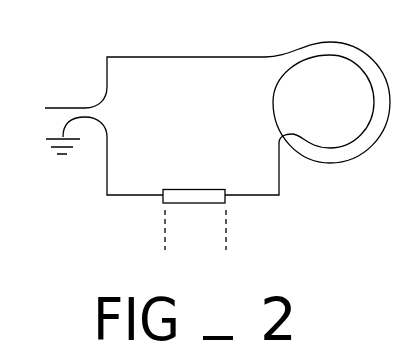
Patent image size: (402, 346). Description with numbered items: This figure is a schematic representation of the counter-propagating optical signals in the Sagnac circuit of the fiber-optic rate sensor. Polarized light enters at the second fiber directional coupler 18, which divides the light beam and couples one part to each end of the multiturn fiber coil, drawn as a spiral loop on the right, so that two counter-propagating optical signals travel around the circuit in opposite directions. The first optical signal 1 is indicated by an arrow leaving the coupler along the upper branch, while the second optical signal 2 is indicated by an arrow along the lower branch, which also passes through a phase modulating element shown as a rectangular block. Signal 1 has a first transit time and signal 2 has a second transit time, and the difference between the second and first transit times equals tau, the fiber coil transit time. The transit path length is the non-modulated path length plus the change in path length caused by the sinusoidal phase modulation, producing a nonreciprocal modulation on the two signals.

The second fiber directional coupler 18 is at (74, 92).
The counter propagating optical signal 1 is at (92, 60).
The counter propagating optical signal 2 is at (393, 60).